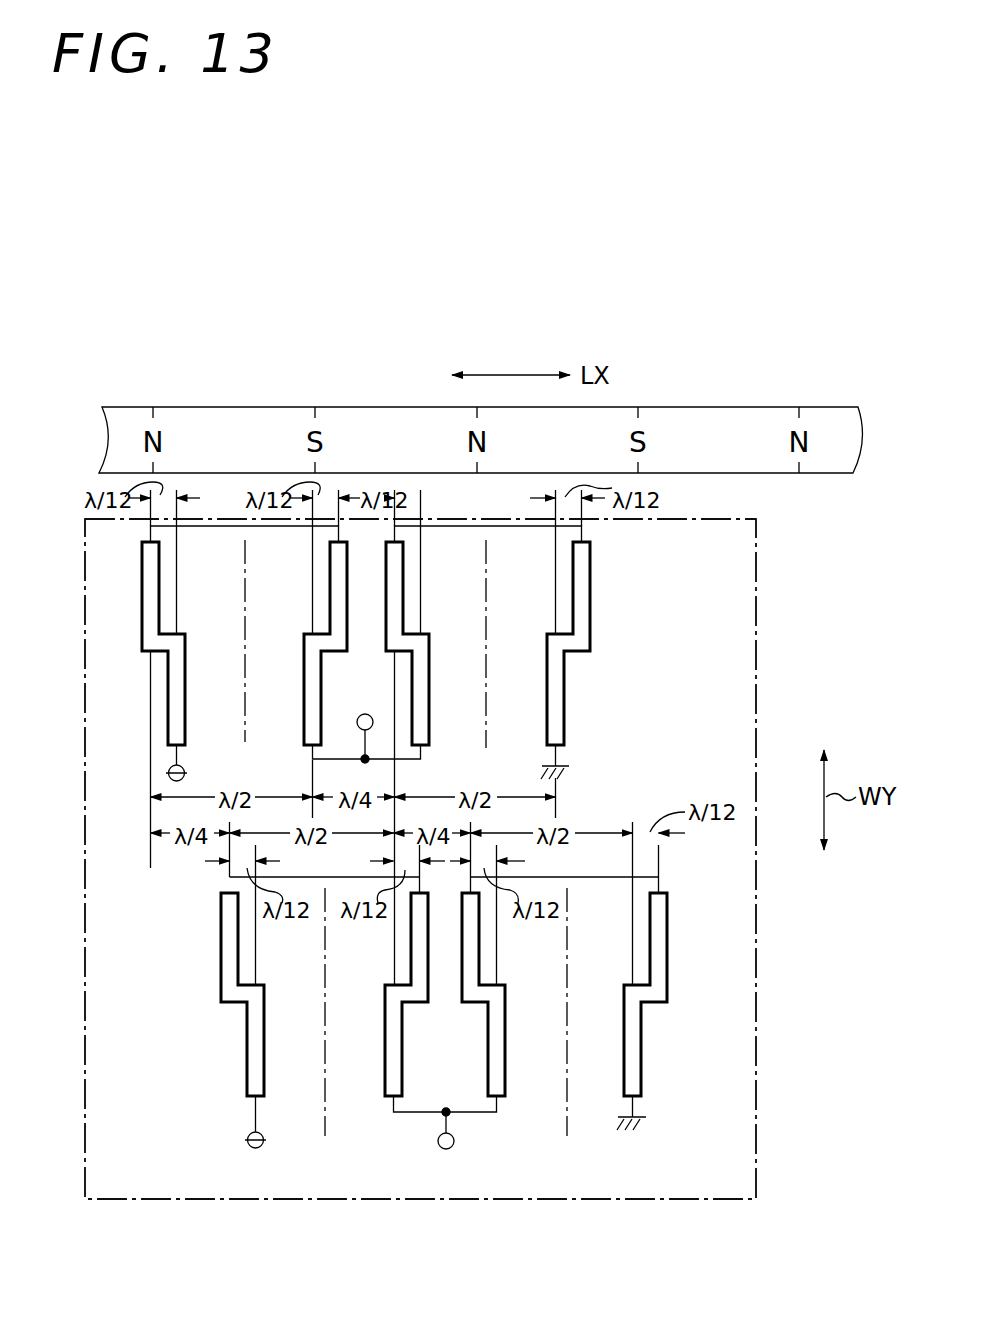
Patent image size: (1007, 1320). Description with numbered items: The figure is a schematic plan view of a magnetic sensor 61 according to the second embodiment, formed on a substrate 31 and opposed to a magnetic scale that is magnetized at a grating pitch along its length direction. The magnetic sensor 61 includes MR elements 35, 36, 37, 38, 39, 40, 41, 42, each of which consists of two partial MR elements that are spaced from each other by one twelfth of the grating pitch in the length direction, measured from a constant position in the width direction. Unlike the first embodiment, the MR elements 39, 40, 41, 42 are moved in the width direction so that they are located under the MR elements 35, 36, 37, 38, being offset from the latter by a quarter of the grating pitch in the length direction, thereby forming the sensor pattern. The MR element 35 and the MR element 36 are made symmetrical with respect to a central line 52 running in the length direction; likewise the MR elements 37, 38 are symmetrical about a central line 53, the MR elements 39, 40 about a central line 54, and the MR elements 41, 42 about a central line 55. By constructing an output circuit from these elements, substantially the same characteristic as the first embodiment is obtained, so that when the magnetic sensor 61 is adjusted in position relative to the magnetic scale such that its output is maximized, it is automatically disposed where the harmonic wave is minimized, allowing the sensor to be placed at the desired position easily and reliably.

The substrate 31 is at (756, 600).
The MR element 35 is at (185, 634).
The MR element 36 is at (304, 628).
The MR element 37 is at (429, 640).
The MR element 38 is at (592, 640).
The MR element 39 is at (218, 996).
The MR element 40 is at (383, 987).
The MR element 41 is at (509, 1005).
The MR element 42 is at (671, 993).
The central line 52 is at (245, 637).
The central line 53 is at (486, 665).
The central line 54 is at (325, 1005).
The central line 55 is at (567, 1002).
The magnetic sensor 61 is at (727, 697).